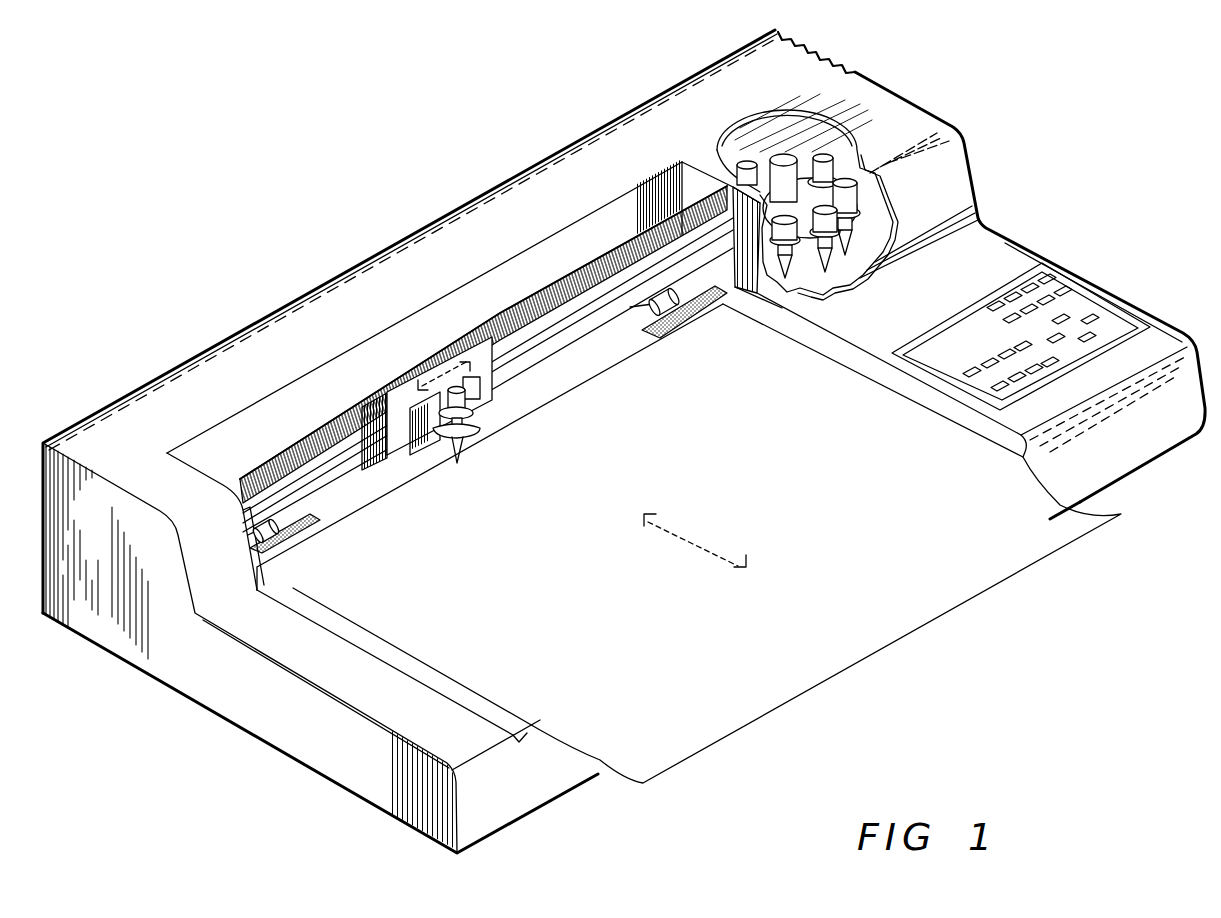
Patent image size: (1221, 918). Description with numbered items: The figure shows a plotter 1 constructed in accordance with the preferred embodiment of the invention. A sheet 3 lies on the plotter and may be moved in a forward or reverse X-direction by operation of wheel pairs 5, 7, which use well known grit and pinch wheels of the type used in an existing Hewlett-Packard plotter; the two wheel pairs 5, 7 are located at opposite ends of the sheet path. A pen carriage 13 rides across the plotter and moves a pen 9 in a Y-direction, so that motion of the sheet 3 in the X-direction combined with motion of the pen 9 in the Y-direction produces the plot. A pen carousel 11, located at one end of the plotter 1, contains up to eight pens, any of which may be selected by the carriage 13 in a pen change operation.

The plotter 1 is at (347, 217).
The sheet 3 is at (1035, 549).
The wheel pair 5 is at (300, 533).
The wheel pair 7 is at (688, 306).
The pen 9 is at (465, 432).
The pen carousel 11 is at (820, 147).
The pen carriage 13 is at (447, 362).